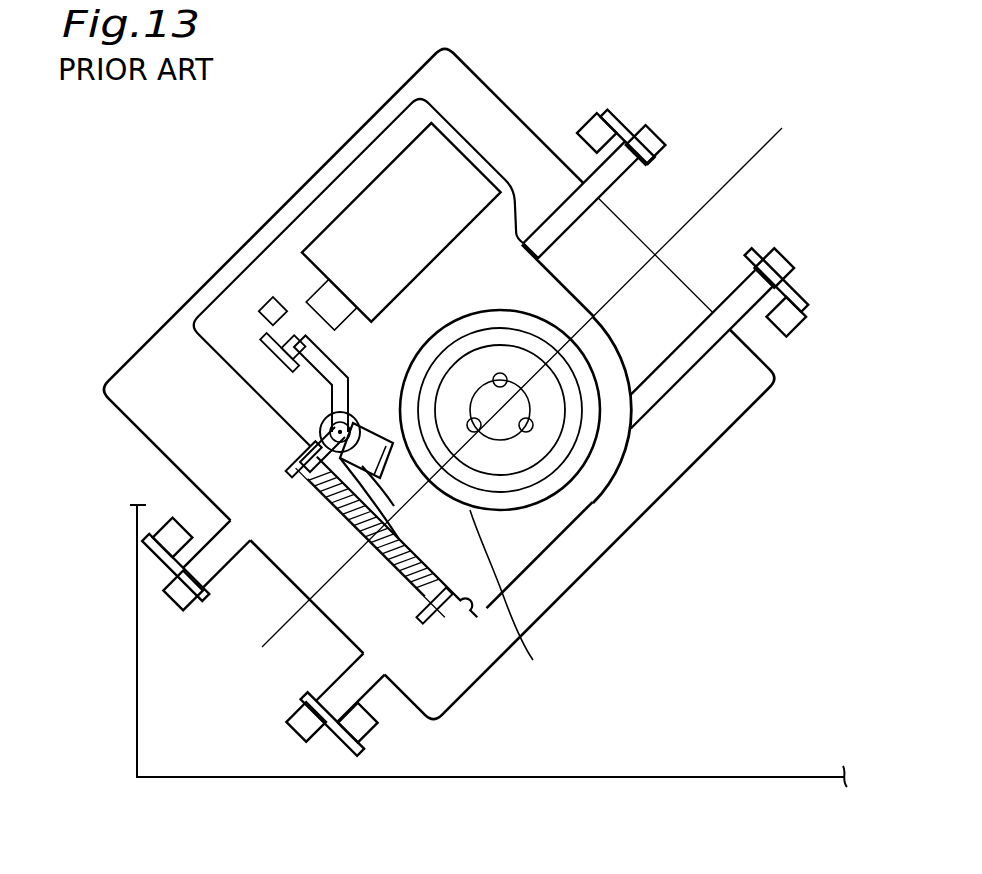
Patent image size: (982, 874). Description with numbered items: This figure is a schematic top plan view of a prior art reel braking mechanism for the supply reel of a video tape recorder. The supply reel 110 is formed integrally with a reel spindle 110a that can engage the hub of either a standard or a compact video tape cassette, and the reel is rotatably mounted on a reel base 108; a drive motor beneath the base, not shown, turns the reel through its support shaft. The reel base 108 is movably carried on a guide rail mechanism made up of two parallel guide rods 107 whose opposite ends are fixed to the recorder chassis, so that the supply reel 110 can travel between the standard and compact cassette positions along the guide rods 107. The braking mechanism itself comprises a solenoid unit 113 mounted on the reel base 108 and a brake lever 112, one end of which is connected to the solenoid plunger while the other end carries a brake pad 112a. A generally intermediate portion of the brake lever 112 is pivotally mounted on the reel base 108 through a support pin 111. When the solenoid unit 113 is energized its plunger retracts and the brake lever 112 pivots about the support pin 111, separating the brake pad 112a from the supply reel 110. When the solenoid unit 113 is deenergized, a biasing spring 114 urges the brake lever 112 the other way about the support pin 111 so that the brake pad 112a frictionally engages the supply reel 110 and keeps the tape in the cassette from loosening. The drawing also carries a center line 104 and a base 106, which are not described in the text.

The axis line 104 is at (774, 138).
The base 106 is at (705, 777).
The guide rods 107 is at (570, 210).
The reel base 108 is at (530, 550).
The supply reel 110 is at (558, 477).
The reel spindle 110a is at (540, 417).
The support pin 111 is at (352, 415).
The brake lever 112 is at (393, 465).
The brake pad 112a is at (528, 607).
The solenoid unit 113 is at (378, 200).
The biasing spring 114 is at (385, 565).